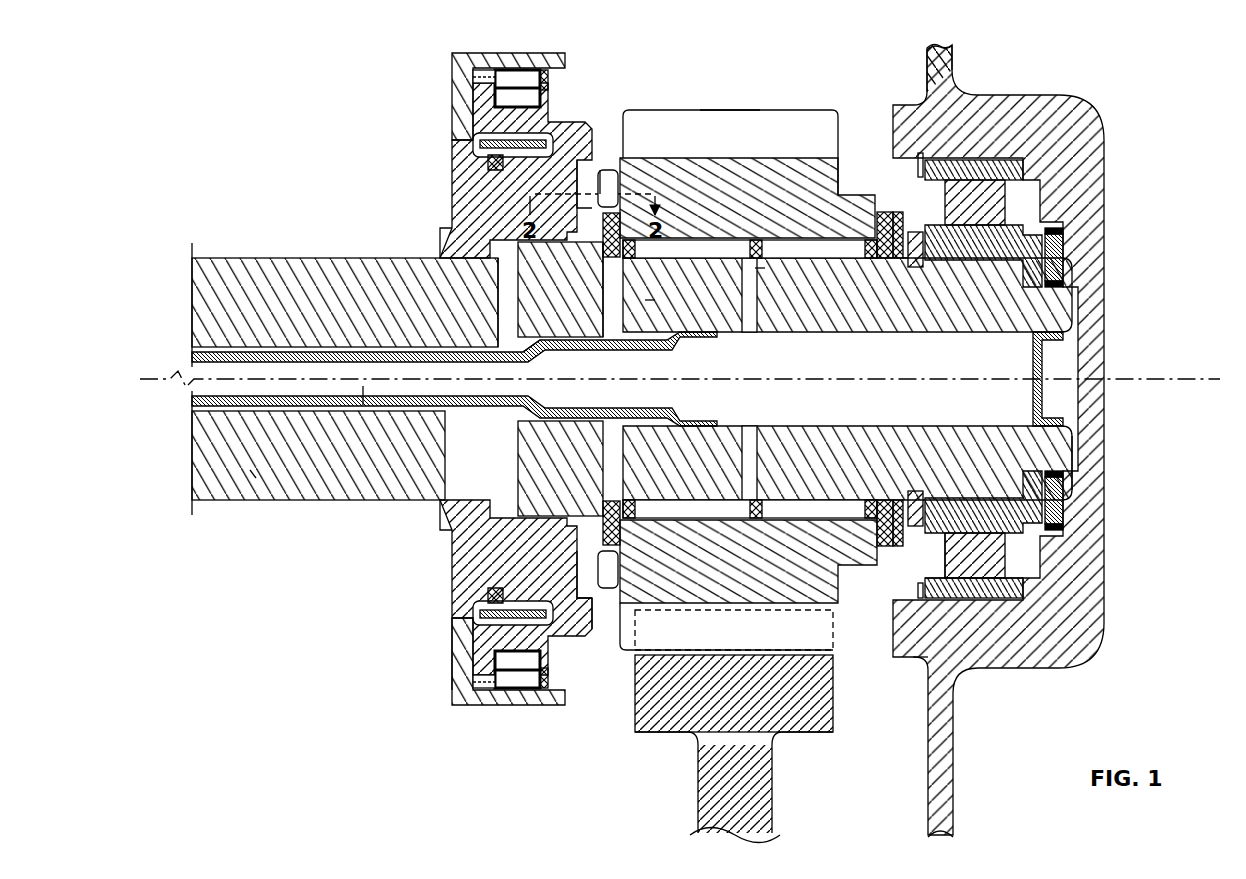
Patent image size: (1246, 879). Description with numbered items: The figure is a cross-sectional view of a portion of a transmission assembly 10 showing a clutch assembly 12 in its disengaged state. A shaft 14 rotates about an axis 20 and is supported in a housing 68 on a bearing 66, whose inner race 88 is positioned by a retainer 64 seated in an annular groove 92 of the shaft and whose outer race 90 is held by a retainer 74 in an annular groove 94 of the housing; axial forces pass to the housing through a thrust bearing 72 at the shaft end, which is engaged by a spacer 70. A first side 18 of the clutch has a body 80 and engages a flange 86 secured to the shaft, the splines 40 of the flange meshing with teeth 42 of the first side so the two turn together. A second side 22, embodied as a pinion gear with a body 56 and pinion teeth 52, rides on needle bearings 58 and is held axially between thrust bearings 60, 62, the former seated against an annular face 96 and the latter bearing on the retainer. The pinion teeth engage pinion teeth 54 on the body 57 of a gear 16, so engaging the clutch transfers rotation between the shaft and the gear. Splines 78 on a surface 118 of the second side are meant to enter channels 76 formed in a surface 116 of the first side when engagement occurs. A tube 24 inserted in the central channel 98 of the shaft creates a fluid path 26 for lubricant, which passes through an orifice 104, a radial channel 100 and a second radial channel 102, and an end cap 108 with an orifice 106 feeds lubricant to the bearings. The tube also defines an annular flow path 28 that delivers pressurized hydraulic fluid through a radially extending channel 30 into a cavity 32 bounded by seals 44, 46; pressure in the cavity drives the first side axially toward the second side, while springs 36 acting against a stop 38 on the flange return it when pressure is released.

The transmission assembly 10 is at (1135, 152).
The clutch assembly 12 is at (396, 650).
The shaft 14 is at (358, 478).
The gear 16 is at (705, 775).
The first side 18 is at (575, 128).
The axis 20 is at (1222, 372).
The second side 22 is at (762, 120).
The tube 24 is at (252, 418).
The fluid path 26 is at (363, 398).
The annular flow path 28 is at (248, 350).
The radially extending channel 30 is at (497, 283).
The cavity 32 is at (490, 165).
The springs 36 is at (500, 108).
The stop 38 is at (560, 68).
The splines 40 is at (515, 72).
The teeth 42 is at (490, 100).
The seal 44 is at (478, 145).
The seal 46 is at (468, 240).
The pinion teeth 52 is at (718, 118).
The pinion teeth 54 is at (833, 640).
The body 56 is at (848, 195).
The body 57 is at (822, 690).
The needle bearings 58 is at (725, 250).
The thrust bearing 60 is at (588, 530).
The thrust bearing 62 is at (890, 500).
The retainer 64 is at (915, 280).
The bearing 66 is at (1020, 540).
The housing 68 is at (1085, 180).
The spacer 70 is at (1055, 265).
The thrust bearing 72 is at (1072, 255).
The retainer 74 is at (918, 593).
The channels 76 is at (625, 200).
The splines 78 is at (640, 232).
The body 80 is at (470, 588).
The flange 86 is at (452, 655).
The inner race 88 is at (1012, 565).
The outer race 90 is at (1005, 590).
The annular groove 92 is at (915, 275).
The annular groove 94 is at (922, 610).
The annular face 96 is at (595, 268).
The central channel 98 is at (305, 430).
The radial channel 100 is at (650, 300).
The second radial channel 102 is at (757, 268).
The orifice 104 is at (592, 357).
The orifice 106 is at (1042, 372).
The end cap 108 is at (1078, 438).
The surface 116 is at (596, 225).
The surface 118 is at (590, 552).